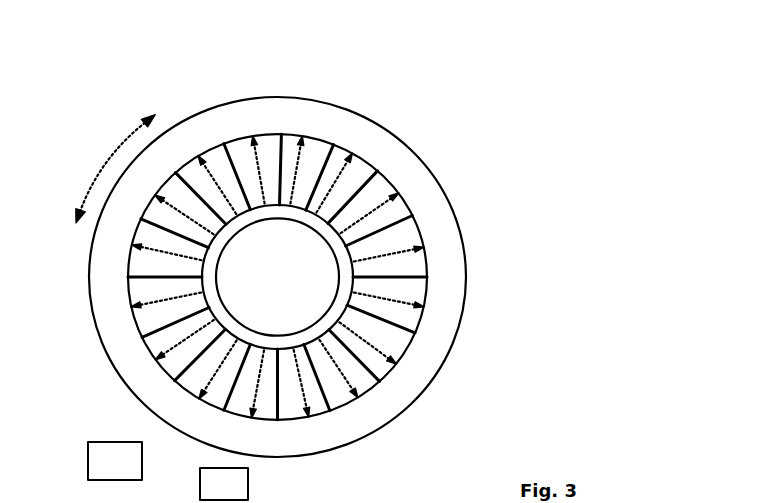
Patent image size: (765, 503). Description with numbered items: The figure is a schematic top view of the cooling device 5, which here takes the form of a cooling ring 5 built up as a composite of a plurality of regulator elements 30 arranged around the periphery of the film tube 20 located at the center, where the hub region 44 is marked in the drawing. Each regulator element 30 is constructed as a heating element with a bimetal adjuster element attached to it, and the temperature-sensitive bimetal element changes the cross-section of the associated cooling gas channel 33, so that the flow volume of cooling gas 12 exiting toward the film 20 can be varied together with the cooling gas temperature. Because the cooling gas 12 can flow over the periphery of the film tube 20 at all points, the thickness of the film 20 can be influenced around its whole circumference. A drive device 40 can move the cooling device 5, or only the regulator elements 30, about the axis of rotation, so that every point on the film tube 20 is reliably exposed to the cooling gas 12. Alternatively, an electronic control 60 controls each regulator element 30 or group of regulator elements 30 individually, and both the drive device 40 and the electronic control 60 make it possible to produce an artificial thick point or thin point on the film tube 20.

The cooling device 5 is at (557, 100).
The cooling gas 12 is at (403, 248).
The film tube 20 is at (428, 258).
The regulator element 30 is at (348, 153).
The cooling gas channel 33 is at (386, 192).
The drive device 40 is at (170, 432).
The hub 44 is at (277, 277).
The electronic control 60 is at (273, 465).